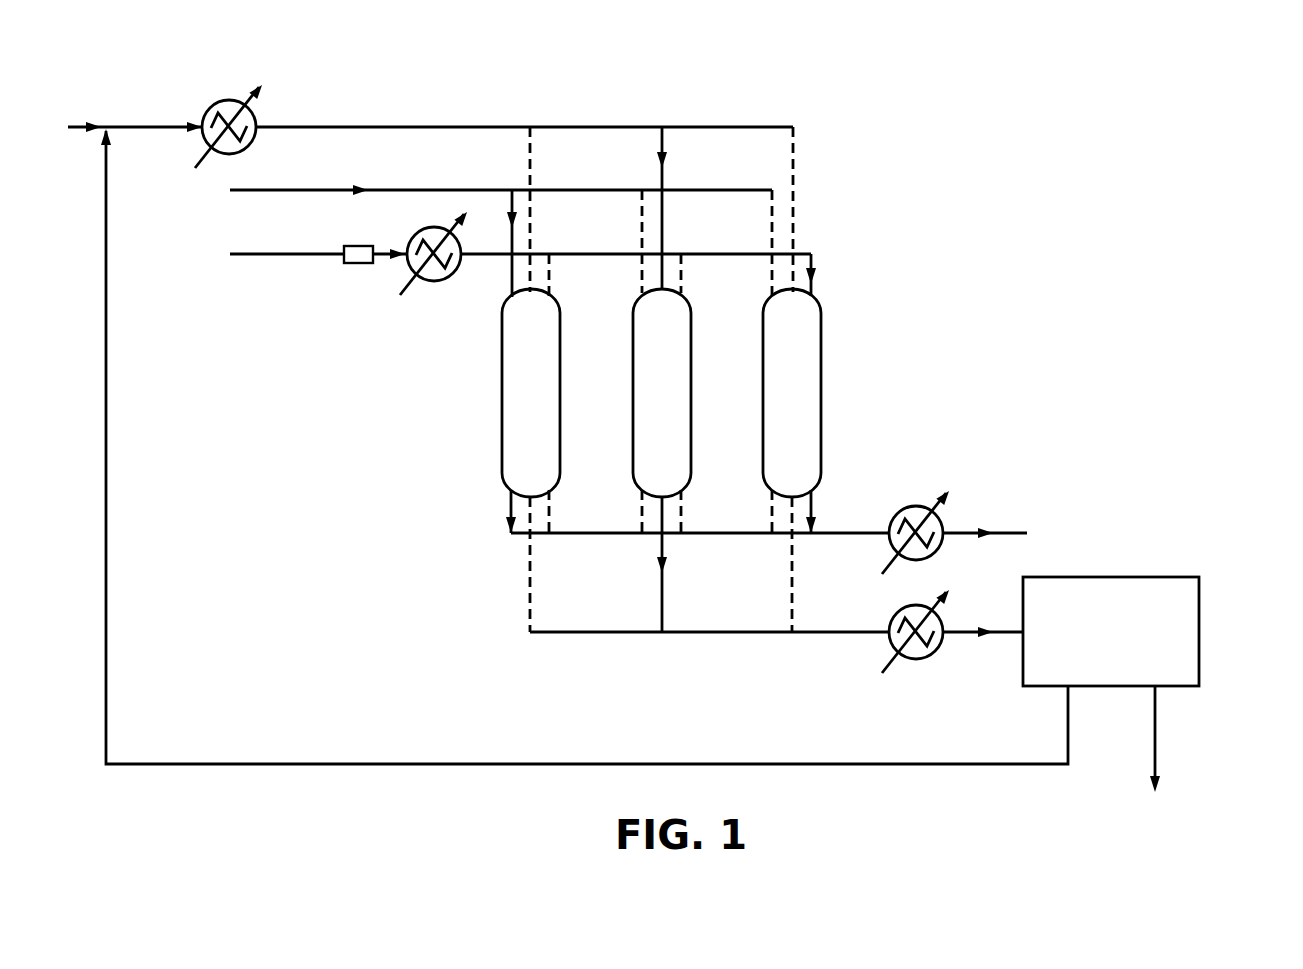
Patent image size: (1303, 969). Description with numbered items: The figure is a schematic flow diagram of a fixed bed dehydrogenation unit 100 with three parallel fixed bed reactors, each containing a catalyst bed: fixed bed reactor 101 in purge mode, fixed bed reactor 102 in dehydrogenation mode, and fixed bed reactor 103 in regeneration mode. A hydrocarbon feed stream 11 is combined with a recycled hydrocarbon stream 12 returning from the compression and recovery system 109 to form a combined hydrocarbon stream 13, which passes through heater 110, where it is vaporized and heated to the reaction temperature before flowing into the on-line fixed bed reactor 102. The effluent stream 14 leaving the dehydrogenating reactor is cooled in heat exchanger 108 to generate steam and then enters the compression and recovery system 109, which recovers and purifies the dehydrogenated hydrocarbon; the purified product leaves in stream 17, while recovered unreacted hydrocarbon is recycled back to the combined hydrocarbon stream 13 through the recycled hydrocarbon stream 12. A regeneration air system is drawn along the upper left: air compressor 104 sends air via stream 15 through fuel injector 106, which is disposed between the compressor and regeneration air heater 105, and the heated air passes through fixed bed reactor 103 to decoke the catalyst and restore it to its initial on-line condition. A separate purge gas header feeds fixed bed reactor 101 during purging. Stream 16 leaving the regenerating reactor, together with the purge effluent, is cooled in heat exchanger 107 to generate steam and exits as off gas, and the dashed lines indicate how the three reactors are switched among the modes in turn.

The fixed bed dehydrogenation unit 100 is at (978, 94).
The hydrocarbon feed stream 11 is at (73, 123).
The combined hydrocarbon stream 13 is at (149, 123).
The heater 110 is at (257, 139).
The air compressor 104 is at (185, 277).
The stream 15 is at (295, 257).
The fuel injector 106 is at (360, 264).
The regeneration air heater 105 is at (436, 282).
The fixed bed reactor 101 is at (531, 393).
The fixed bed reactor 102 is at (662, 393).
The fixed bed reactor 103 is at (792, 393).
The stream 16 is at (723, 535).
The heat exchanger 107 is at (935, 553).
The effluent stream 14 is at (835, 634).
The heat exchanger 108 is at (935, 652).
The compression and recovery system 109 is at (1199, 632).
The stream 17 is at (1158, 722).
The recycled hydrocarbon stream 12 is at (835, 764).